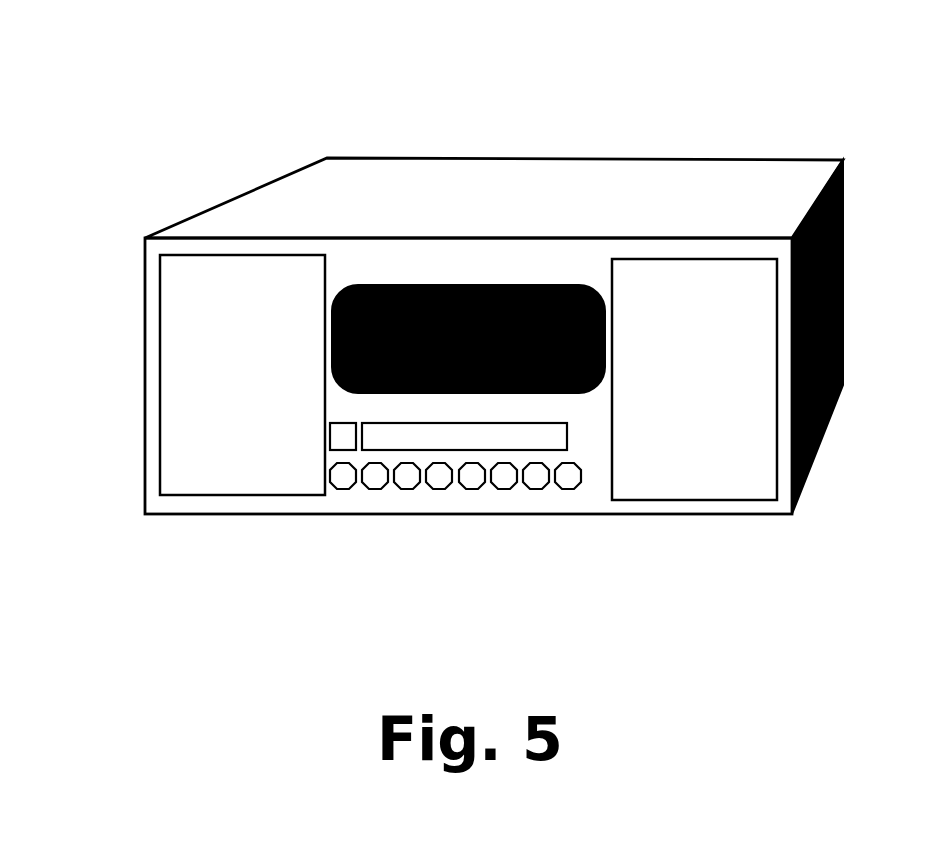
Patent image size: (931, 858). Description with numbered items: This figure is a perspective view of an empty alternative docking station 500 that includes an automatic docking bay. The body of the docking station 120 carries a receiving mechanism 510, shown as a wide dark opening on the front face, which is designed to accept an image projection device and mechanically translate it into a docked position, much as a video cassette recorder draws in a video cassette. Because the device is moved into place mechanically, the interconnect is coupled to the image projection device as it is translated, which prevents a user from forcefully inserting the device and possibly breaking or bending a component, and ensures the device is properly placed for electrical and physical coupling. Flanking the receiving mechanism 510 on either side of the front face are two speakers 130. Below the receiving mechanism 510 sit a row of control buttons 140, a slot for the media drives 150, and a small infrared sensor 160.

The alternative docking station 500 is at (131, 92).
The docking station 120 is at (552, 195).
The speakers 130 is at (243, 373).
The receiving mechanism 510 is at (392, 313).
The infrared (I/R) sensor 160 is at (343, 437).
The media drives 150 is at (532, 437).
The control buttons 140 is at (408, 477).